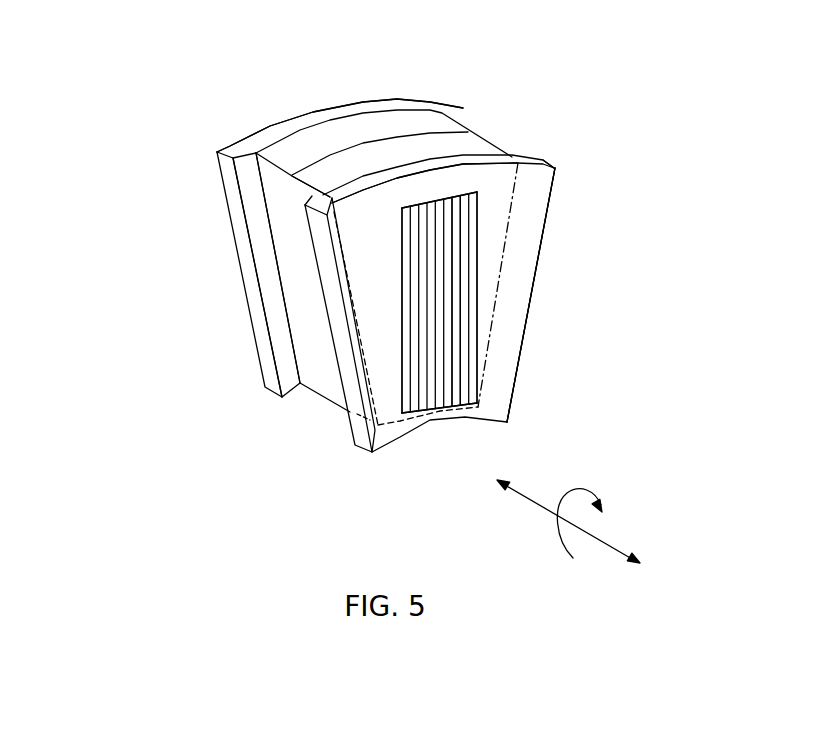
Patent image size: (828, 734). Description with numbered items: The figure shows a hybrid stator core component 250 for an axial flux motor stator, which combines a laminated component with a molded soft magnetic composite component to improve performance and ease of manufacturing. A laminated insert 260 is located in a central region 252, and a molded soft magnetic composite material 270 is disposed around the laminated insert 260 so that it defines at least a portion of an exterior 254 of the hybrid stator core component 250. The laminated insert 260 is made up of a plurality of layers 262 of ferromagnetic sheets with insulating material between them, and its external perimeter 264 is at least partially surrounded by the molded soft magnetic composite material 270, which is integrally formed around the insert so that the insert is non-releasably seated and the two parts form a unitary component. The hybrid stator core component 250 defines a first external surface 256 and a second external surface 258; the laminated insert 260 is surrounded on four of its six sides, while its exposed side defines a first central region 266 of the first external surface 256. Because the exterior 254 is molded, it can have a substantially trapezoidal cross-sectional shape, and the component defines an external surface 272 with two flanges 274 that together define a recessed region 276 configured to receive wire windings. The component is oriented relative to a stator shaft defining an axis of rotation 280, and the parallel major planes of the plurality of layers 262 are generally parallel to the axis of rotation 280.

The hybrid stator core component 250 is at (315, 234).
The central region 252 is at (480, 208).
The exterior 254 is at (198, 275).
The first external surface 256 is at (495, 302).
The second external surface 258 is at (364, 82).
The laminated insert 260 is at (550, 285).
The plurality of layers 262 is at (439, 343).
The external perimeter 264 is at (446, 223).
The first central region 266 is at (313, 302).
The molded soft magnetic composite material 270 is at (571, 291).
The external surface 272 is at (375, 114).
The flanges 274 is at (236, 298).
The recessed region 276 is at (297, 219).
The axis of rotation 280 is at (512, 521).